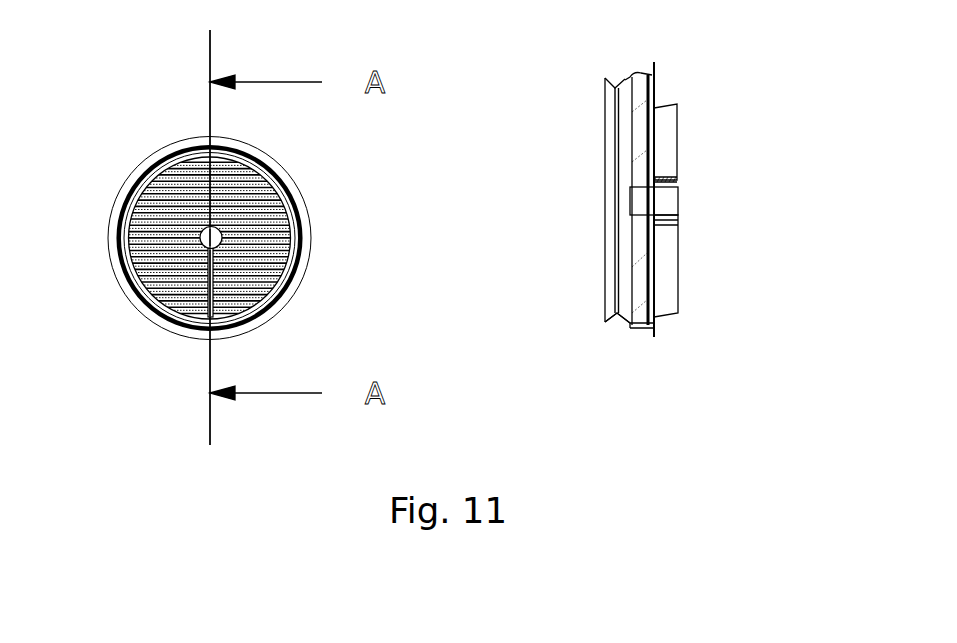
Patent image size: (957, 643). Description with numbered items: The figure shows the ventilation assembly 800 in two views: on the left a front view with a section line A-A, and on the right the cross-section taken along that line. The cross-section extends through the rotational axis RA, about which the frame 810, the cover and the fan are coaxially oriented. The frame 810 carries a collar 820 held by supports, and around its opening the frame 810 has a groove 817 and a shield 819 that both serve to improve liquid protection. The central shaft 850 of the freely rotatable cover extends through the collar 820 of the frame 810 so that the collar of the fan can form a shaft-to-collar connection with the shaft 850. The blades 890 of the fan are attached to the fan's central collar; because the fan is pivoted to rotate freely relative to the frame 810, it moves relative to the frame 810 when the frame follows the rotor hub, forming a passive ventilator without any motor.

The ventilation assembly 800 is at (113, 67).
The frame 810 is at (623, 82).
The groove 817 is at (608, 330).
The shield 819 is at (605, 78).
The collar 820 is at (659, 180).
The central shaft 850 is at (670, 200).
The blades 890 is at (665, 293).
The rotational axis RA is at (221, 234).